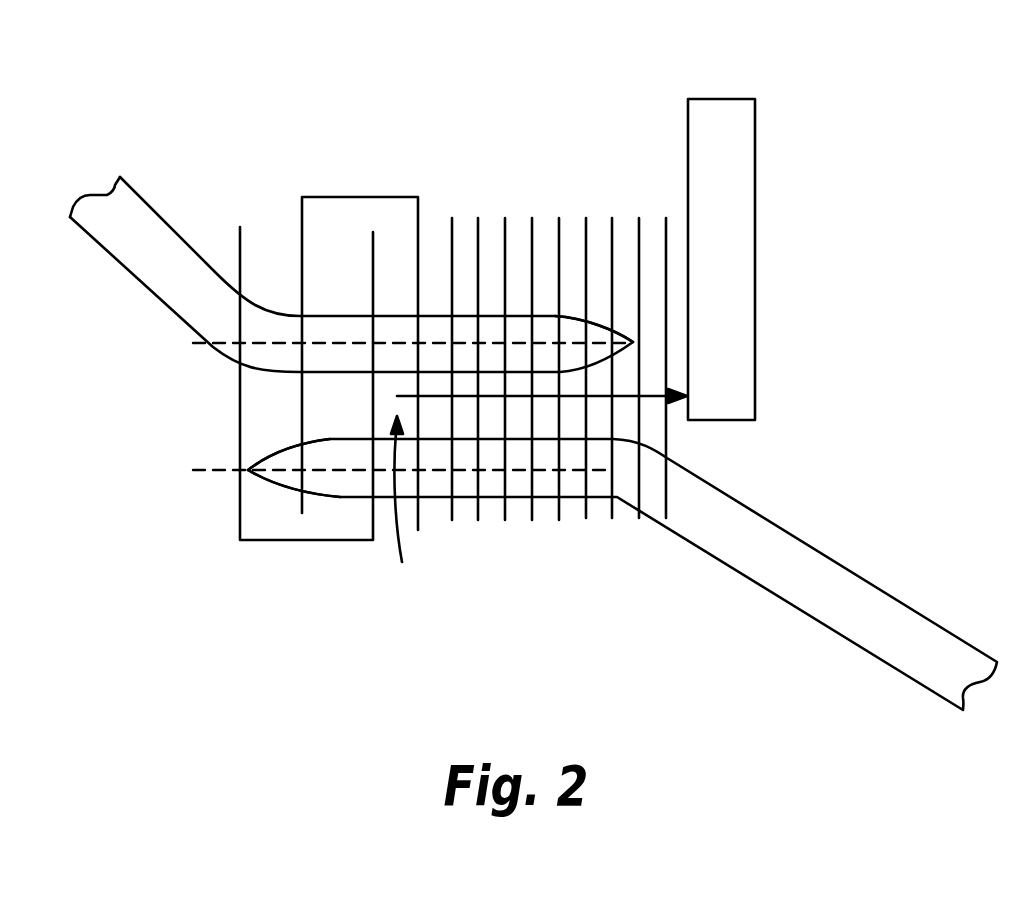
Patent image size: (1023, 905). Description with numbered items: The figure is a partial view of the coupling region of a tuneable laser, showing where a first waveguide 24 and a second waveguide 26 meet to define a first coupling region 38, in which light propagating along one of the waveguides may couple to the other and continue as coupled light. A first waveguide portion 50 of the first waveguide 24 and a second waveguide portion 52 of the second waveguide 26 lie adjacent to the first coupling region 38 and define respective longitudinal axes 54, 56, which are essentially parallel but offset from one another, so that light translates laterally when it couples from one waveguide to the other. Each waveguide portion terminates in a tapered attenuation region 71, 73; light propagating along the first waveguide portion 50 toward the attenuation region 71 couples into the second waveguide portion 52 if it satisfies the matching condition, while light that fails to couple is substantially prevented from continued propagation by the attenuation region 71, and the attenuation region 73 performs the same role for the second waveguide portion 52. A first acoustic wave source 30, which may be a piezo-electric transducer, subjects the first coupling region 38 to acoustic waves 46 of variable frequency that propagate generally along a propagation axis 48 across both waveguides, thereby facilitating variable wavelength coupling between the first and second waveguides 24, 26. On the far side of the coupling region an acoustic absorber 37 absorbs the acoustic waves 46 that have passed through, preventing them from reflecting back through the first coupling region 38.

The first waveguide 24 is at (163, 223).
The second waveguide 26 is at (905, 603).
The first acoustic wave source 30 is at (270, 540).
The acoustic absorber 37 is at (756, 108).
The first coupling region 38 is at (402, 514).
The acoustic waves 46 is at (502, 228).
The propagation axis 48 is at (672, 400).
The first waveguide portion 50 is at (277, 337).
The second waveguide portion 52 is at (333, 500).
The longitudinal axis 54 is at (211, 345).
The longitudinal axis 56 is at (215, 470).
The attenuation region 71 is at (601, 318).
The attenuation region 73 is at (290, 440).